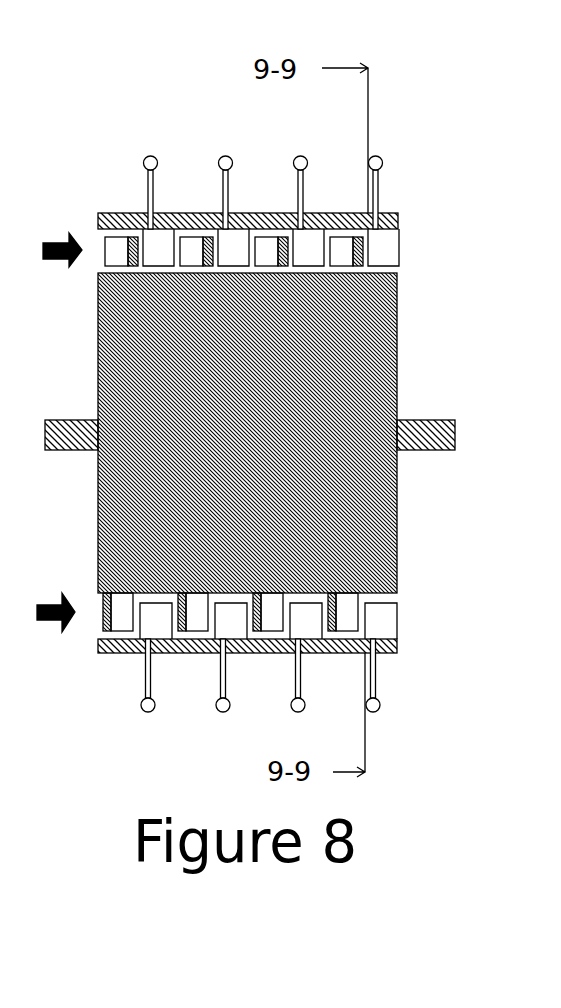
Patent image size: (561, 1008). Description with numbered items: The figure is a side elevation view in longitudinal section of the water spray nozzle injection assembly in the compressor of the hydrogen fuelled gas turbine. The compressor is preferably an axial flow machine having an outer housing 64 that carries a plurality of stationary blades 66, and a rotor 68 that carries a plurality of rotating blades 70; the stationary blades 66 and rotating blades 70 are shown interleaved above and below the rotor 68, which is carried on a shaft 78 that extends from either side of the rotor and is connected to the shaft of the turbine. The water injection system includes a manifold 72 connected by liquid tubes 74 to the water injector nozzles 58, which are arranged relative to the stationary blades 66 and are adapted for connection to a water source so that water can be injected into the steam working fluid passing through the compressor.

The water injector nozzles 58 is at (377, 630).
The outer housing 64 is at (100, 213).
The stationary blades 66 is at (400, 245).
The rotor 68 is at (397, 327).
The rotating blades 70 is at (197, 622).
The manifold 72 is at (387, 705).
The liquid tubes 74 is at (378, 672).
The shaft 78 is at (447, 413).